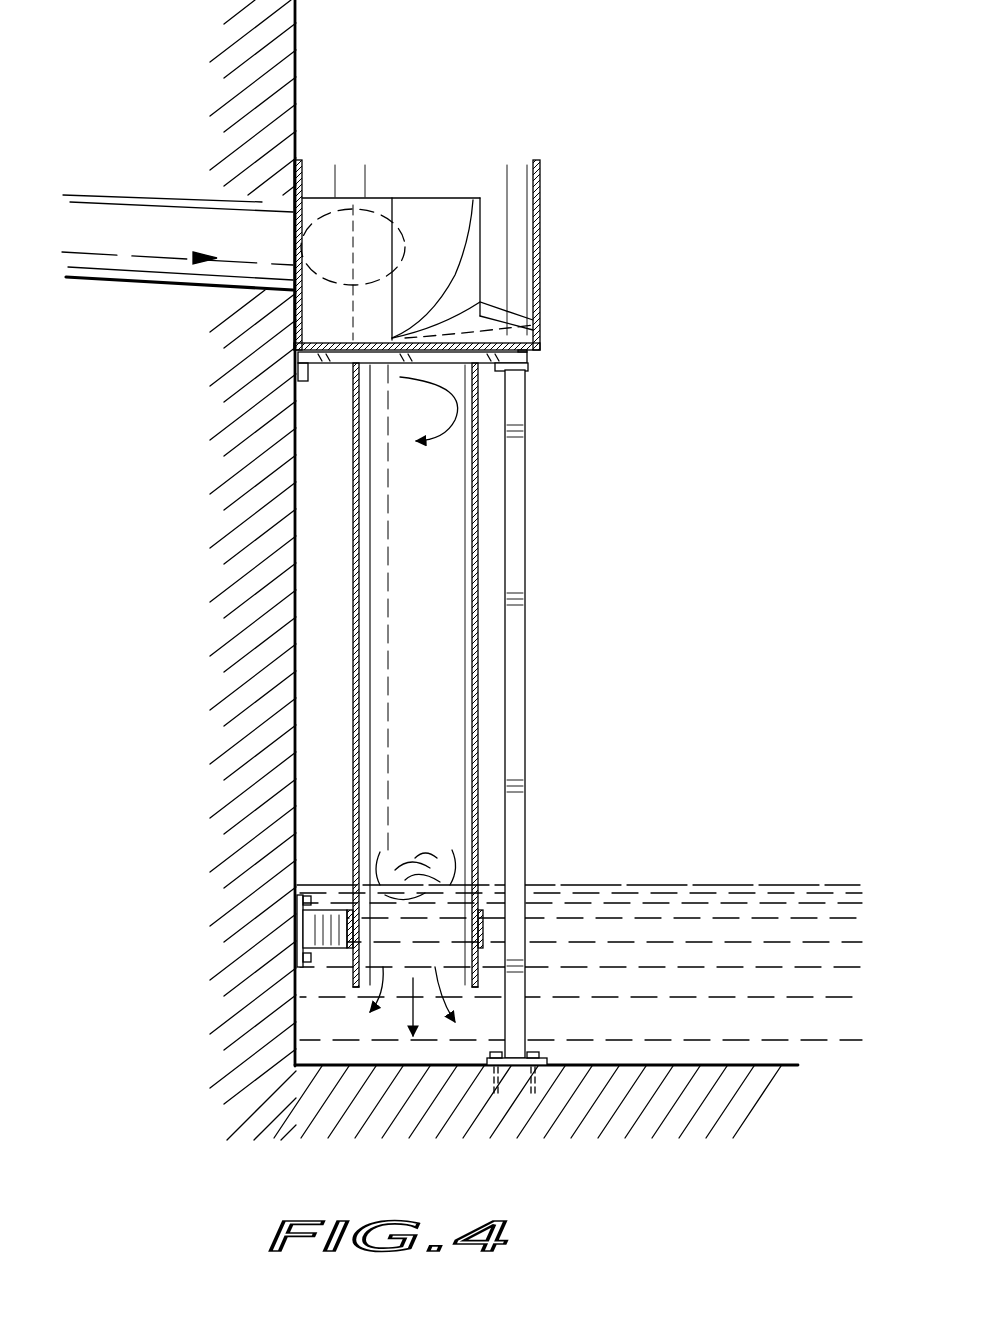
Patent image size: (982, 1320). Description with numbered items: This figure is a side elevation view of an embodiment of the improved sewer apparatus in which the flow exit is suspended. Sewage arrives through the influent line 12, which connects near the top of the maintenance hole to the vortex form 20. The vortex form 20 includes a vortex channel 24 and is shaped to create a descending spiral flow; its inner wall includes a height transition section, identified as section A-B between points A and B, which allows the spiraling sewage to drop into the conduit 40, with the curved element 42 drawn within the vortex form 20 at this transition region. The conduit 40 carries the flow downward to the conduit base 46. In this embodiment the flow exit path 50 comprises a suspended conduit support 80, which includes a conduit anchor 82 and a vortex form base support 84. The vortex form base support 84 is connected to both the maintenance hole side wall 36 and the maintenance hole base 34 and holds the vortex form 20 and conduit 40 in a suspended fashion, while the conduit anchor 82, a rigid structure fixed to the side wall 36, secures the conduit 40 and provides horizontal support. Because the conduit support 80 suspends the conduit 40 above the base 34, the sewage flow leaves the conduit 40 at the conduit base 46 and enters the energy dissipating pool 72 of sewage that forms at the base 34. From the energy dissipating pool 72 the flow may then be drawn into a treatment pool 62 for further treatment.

The influent line 12 is at (172, 290).
The vortex form 20 is at (546, 196).
The vortex channel 24 is at (500, 292).
The base 34 is at (755, 1065).
The walls 36 is at (297, 548).
The conduit 40 is at (480, 534).
The deflector blade 42 is at (441, 272).
The conduit base 46 is at (353, 970).
The flow exit path 50 is at (355, 1003).
The treatment pool 62 is at (697, 885).
The energy dissipating pool 72 is at (715, 957).
The suspended conduit support 80 is at (530, 833).
The conduit anchor 82 is at (340, 912).
The vortex form base support 84 is at (452, 364).
The height transition section endpoint A is at (480, 197).
The height transition section endpoint B is at (390, 337).